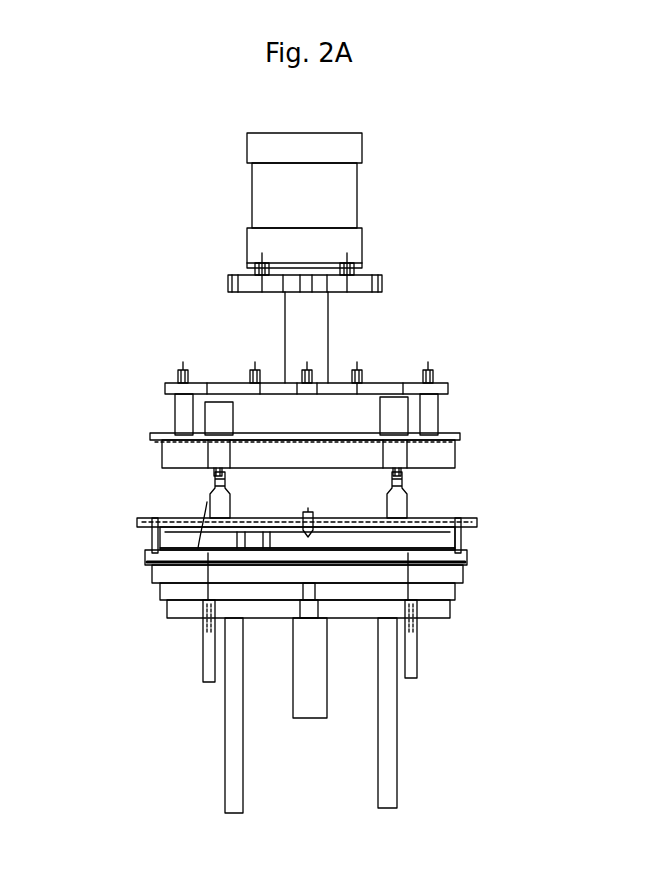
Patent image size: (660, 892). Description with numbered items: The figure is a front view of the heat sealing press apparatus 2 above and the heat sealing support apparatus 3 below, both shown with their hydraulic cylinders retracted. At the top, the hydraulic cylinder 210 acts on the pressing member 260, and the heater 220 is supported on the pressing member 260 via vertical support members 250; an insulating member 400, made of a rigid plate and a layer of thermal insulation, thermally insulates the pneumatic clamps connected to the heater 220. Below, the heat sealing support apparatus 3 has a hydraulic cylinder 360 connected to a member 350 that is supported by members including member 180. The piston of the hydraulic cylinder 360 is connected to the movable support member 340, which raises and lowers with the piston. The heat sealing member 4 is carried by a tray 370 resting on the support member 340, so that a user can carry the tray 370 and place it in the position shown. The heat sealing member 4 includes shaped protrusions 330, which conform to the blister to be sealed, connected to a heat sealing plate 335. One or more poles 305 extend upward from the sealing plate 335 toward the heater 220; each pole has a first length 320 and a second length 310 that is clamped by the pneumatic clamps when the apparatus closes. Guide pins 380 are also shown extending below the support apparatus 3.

The heat sealing press apparatus 2 is at (441, 344).
The heat sealing support apparatus 3 is at (169, 714).
The heat sealing member 4 is at (175, 506).
The member 180 is at (398, 722).
The hydraulic cylinder 210 is at (318, 206).
The heater 220 is at (457, 448).
The vertical support members 250 is at (445, 405).
The pressing member 260 is at (452, 378).
The poles 305 is at (207, 502).
The second length 310 is at (410, 478).
The first length 320 is at (477, 516).
The shaped protrusions 330 is at (263, 532).
The heat sealing plate 335 is at (150, 555).
The movable support member 340 is at (463, 583).
The member 350 is at (455, 608).
The hydraulic cylinder 360 is at (322, 681).
The tray 370 is at (467, 543).
The guide pins 380 is at (203, 653).
The insulating member 400 is at (465, 433).